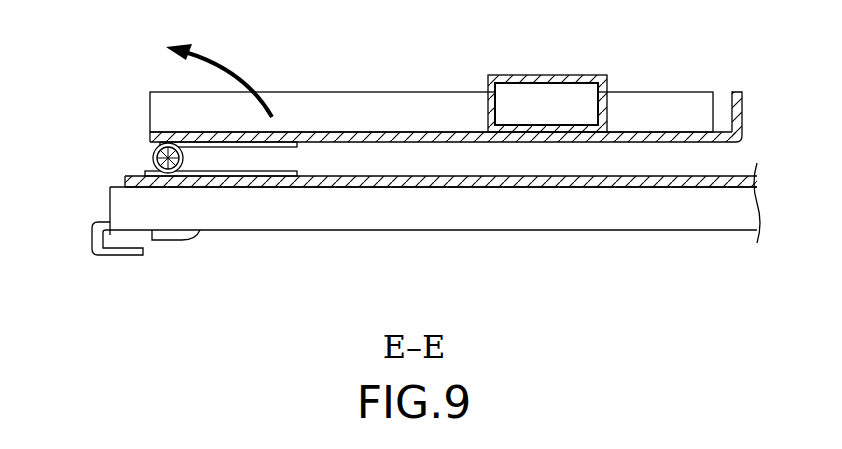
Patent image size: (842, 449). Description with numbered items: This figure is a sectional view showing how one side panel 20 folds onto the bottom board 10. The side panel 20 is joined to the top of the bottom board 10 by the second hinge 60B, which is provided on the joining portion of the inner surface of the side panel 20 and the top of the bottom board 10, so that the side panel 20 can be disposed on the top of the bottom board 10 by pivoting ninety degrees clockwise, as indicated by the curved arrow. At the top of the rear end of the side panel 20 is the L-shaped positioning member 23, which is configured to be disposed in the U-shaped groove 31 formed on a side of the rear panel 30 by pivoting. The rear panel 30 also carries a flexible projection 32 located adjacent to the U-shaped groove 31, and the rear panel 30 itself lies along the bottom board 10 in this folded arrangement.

The bottom board 10 is at (722, 183).
The side panel 20 is at (380, 138).
The L-shaped positioning member 23 is at (735, 93).
The rear panel 30 is at (490, 212).
The U-shaped groove 31 is at (113, 248).
The flexible projection 32 is at (178, 235).
The second hinge 60B is at (155, 150).